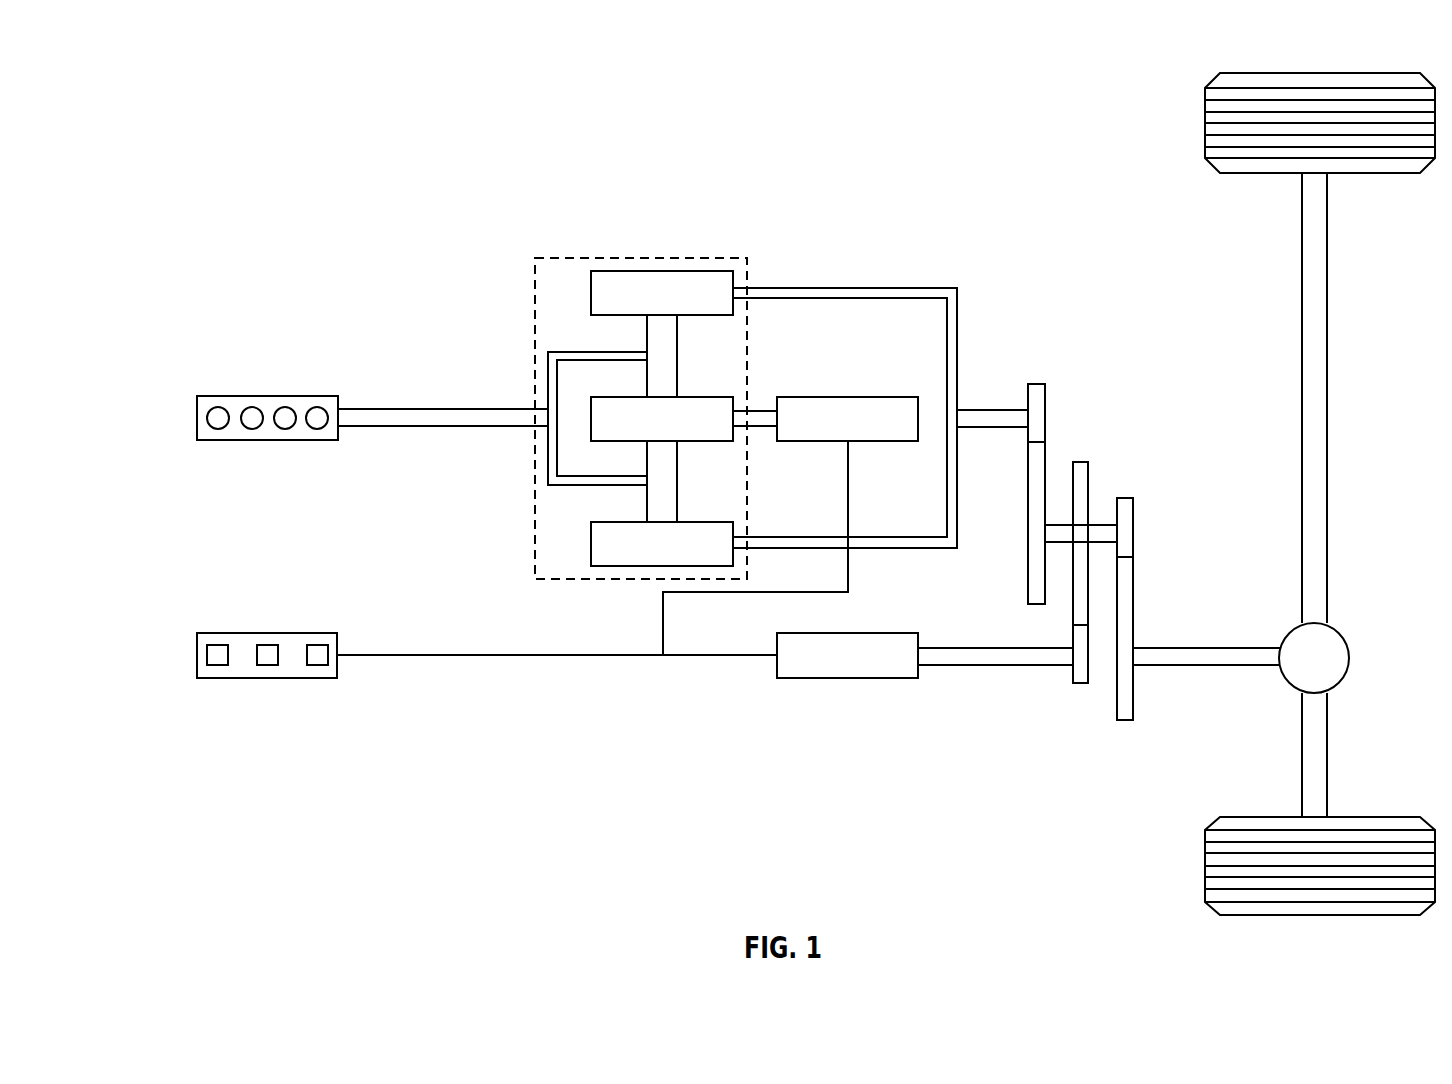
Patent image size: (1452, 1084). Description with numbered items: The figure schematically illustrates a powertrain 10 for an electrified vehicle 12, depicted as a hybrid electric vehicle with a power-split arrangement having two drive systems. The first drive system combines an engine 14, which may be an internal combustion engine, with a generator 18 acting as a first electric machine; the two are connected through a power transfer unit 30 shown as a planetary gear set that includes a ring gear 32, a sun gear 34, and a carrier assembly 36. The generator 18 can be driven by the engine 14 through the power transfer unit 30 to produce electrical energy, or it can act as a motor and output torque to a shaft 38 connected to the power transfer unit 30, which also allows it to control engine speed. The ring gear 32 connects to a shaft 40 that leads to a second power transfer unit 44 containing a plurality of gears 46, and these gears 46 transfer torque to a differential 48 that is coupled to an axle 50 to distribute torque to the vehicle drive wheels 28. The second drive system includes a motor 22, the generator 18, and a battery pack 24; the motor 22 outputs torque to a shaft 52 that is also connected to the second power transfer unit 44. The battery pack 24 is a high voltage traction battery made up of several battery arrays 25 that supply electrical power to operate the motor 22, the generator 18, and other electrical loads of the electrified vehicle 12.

The powertrain 10 is at (236, 160).
The electrified vehicle 12 is at (871, 226).
The engine 14 is at (252, 441).
The generator 18 is at (864, 397).
The motor 22 is at (830, 633).
The battery pack 24 is at (197, 656).
The battery arrays 25 is at (218, 657).
The vehicle drive wheels 28 is at (1382, 73).
The power transfer unit 30 is at (587, 256).
The ring gear 32 is at (666, 271).
The sun gear 34 is at (634, 443).
The carrier assembly 36 is at (548, 455).
The shaft 38 is at (761, 409).
The shaft 40 is at (971, 430).
The second power transfer unit 44 is at (1160, 382).
The gears 46 is at (1040, 384).
The differential 48 is at (1349, 660).
The axle 50 is at (1328, 442).
The shaft 52 is at (940, 668).